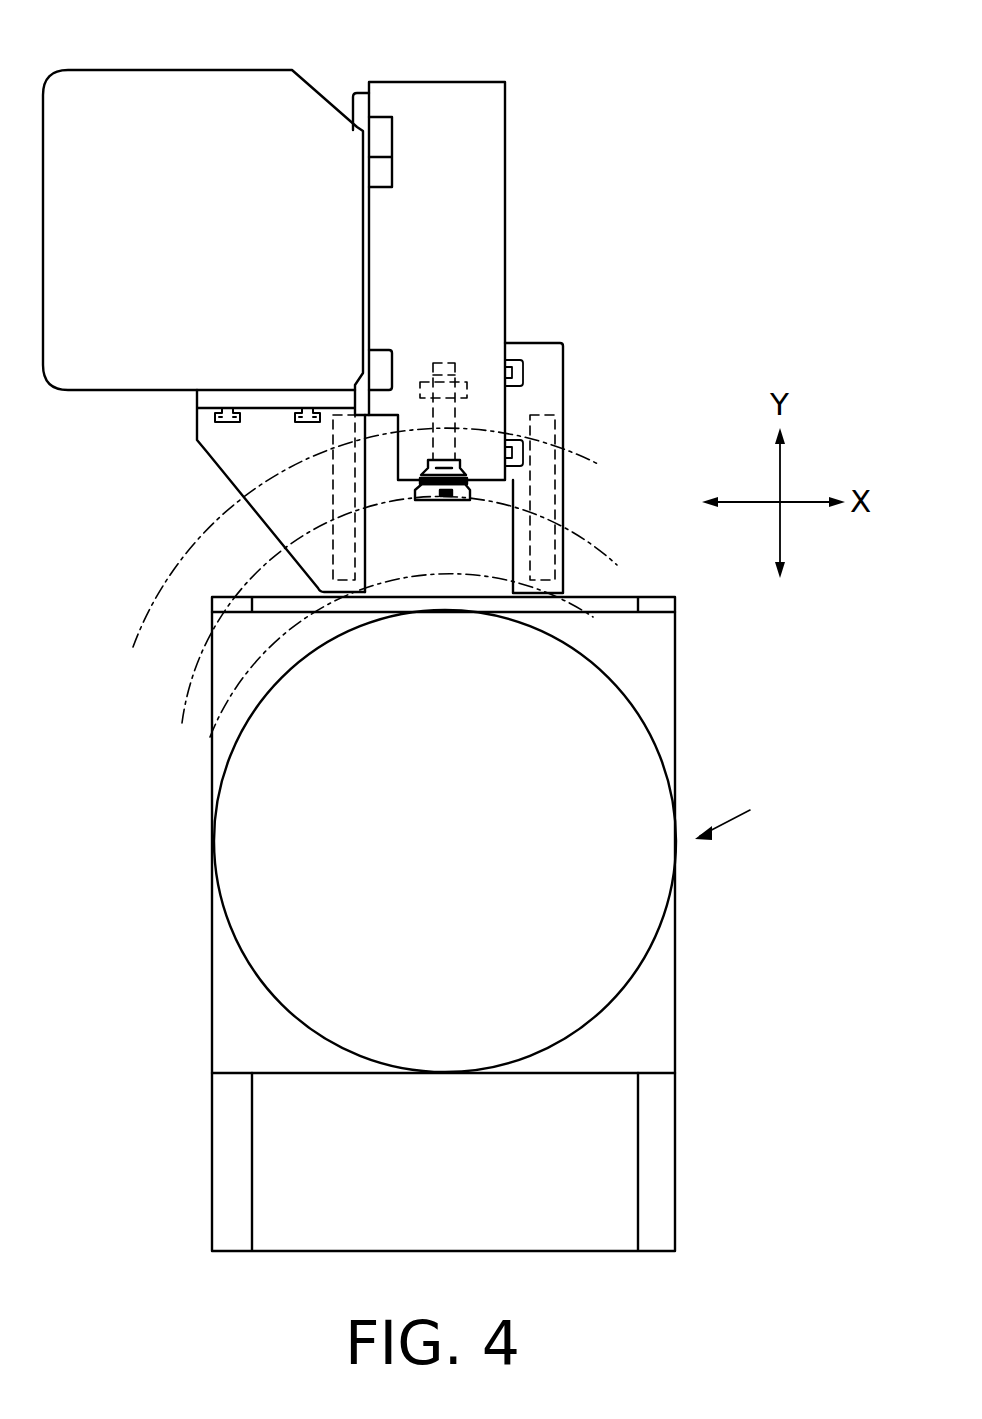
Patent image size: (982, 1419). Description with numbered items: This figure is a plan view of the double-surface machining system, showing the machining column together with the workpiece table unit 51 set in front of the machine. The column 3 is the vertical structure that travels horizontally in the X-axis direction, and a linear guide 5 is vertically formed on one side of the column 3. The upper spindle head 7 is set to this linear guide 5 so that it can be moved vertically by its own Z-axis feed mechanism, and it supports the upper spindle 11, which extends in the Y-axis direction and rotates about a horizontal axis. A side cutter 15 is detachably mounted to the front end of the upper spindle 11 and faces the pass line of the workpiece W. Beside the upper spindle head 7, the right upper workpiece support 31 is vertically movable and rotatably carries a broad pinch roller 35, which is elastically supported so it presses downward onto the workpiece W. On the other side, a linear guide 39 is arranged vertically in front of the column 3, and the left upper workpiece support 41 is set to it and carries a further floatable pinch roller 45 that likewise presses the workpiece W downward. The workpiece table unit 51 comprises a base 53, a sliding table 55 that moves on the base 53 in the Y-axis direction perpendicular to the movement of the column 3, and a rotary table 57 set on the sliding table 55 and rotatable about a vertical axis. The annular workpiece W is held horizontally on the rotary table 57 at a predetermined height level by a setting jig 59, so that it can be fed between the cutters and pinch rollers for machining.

The column 3 is at (240, 96).
The linear guide 5 is at (363, 145).
The upper spindle head 7 is at (498, 230).
The right upper workpiece support 31 is at (536, 343).
The upper pinch roller 35 is at (560, 513).
The upper spindle 11 is at (458, 410).
The side cutter 15 is at (456, 500).
The upper pinch roller 45 is at (368, 547).
The left upper workpiece support 41 is at (207, 453).
The linear guide 39 is at (236, 407).
The setting jig 59 is at (597, 620).
The sliding table 55 is at (668, 1022).
The base 53 is at (667, 1130).
The rotary table 57 is at (665, 733).
The workpiece table unit 51 is at (747, 815).
The workpiece W is at (583, 455).